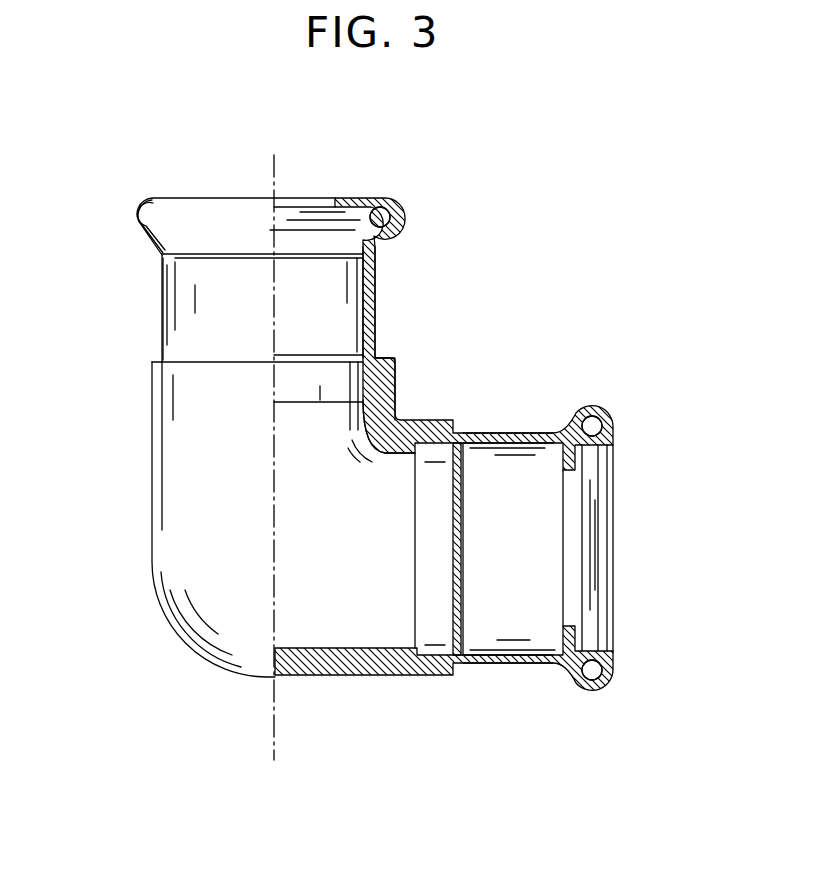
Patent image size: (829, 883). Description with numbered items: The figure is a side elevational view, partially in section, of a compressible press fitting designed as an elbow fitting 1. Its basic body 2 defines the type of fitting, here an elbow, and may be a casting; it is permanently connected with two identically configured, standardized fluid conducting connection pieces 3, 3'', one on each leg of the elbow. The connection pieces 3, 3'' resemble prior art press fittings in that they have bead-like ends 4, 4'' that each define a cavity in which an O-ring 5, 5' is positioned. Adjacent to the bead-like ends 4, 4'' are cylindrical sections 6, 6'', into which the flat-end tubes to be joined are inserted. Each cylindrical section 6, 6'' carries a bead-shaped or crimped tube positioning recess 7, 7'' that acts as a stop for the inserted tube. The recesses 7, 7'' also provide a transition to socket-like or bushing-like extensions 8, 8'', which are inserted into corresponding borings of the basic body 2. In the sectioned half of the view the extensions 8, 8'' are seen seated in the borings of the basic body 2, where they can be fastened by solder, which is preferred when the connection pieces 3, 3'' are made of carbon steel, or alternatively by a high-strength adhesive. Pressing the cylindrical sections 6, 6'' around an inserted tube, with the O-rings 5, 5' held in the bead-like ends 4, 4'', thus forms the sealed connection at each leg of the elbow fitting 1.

The fitting 1 is at (600, 210).
The basic body 2 is at (390, 437).
The connection piece 3 is at (524, 498).
The connection piece 3'' is at (129, 309).
The bead-like end 4 is at (631, 482).
The bead-like end 4'' is at (107, 200).
The O-ring 5 is at (651, 540).
The O-ring 5' is at (419, 170).
The cylindrical section 6 is at (511, 492).
The cylindrical section 6'' is at (419, 280).
The recess 7 is at (478, 608).
The recess 7'' is at (433, 340).
The socket-like extension 8 is at (430, 610).
The socket-like extension 8'' is at (431, 388).